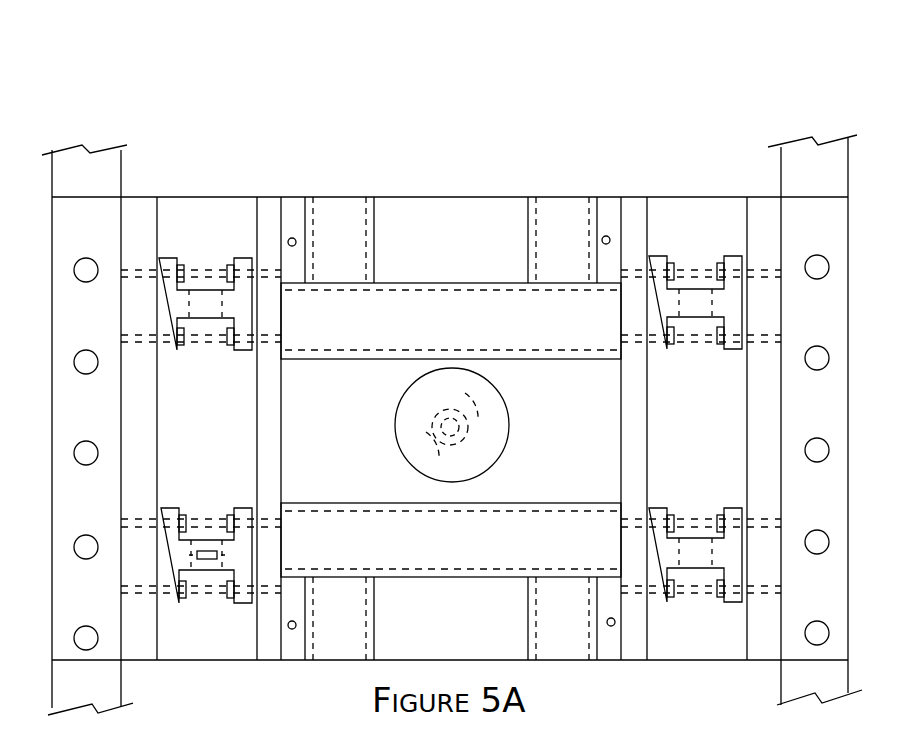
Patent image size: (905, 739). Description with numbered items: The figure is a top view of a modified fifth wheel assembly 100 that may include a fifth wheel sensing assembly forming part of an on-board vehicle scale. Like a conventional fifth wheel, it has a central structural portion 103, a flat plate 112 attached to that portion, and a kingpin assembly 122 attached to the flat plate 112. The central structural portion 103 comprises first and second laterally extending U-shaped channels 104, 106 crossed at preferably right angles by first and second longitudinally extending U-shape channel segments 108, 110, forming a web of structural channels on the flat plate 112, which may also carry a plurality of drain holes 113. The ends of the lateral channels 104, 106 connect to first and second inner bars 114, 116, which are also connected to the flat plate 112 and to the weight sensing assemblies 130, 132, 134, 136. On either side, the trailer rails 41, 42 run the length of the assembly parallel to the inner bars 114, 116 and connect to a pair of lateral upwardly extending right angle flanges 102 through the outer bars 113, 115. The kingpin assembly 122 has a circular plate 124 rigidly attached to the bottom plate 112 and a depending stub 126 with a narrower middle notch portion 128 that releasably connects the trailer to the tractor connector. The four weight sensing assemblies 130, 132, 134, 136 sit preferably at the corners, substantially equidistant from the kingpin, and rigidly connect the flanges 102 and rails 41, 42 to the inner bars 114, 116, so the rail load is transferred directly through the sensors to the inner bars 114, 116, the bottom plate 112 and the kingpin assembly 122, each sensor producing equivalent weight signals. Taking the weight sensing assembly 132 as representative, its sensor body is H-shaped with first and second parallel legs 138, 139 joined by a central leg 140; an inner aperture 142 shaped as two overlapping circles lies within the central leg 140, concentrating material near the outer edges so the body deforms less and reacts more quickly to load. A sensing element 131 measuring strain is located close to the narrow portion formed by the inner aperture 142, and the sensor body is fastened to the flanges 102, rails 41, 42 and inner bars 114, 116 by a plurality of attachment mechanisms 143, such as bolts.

The modified fifth wheel assembly 100 is at (266, 70).
The rail 41 is at (74, 188).
The rail 42 is at (797, 183).
The right angle flange 102 is at (61, 238).
The central structural portion 103 is at (780, 196).
The laterally extending U-shaped channel 104 is at (381, 336).
The laterally extending U-shaped channel 106 is at (359, 548).
The longitudinally extending U-shape channel segment 108 is at (314, 255).
The longitudinally extending U-shape channel segment 110 is at (538, 255).
The flat plate 112 is at (183, 400).
The outer bar / drain holes 113 is at (292, 238).
The inner bar 114 is at (278, 443).
The outer bar 115 is at (753, 421).
The inner bar 116 is at (628, 447).
The kingpin assembly 122 is at (521, 392).
The circular plate 124 is at (505, 448).
The depending stub 126 is at (446, 411).
The middle notch portion 128 is at (451, 448).
The weight sensing assembly 130 is at (204, 267).
The sensing element 131 is at (210, 550).
The weight sensing assembly 132 is at (210, 601).
The weight sensing assembly 134 is at (699, 260).
The weight sensing assembly 136 is at (697, 521).
The parallel leg 138 is at (166, 507).
The parallel leg 139 is at (245, 604).
The central leg 140 is at (198, 571).
The inner aperture 142 is at (200, 540).
The attachment mechanism 143 is at (222, 520).